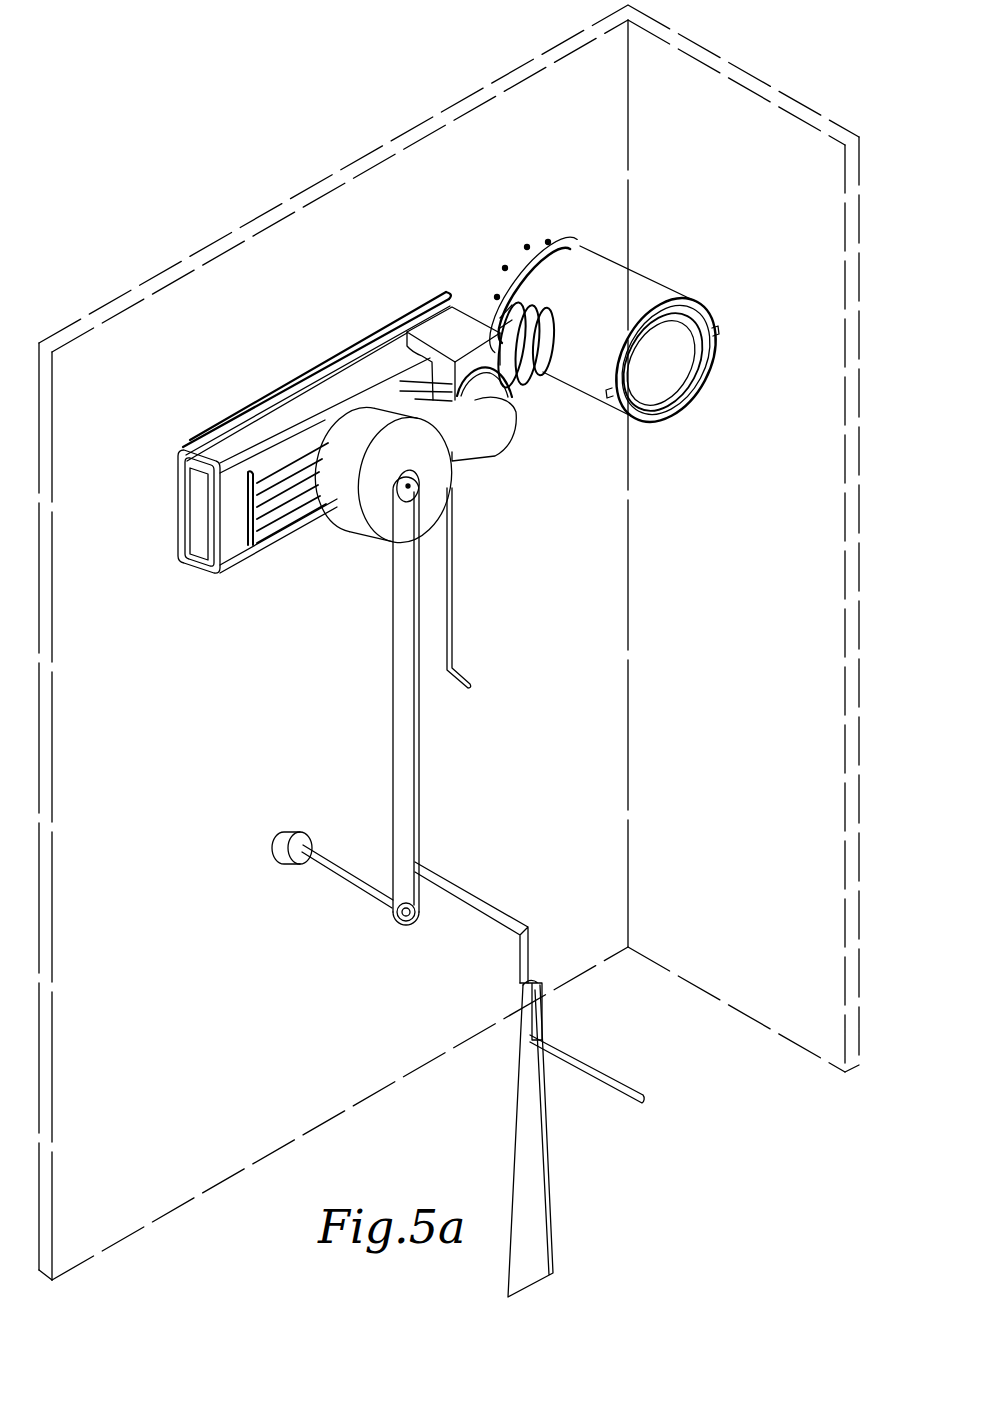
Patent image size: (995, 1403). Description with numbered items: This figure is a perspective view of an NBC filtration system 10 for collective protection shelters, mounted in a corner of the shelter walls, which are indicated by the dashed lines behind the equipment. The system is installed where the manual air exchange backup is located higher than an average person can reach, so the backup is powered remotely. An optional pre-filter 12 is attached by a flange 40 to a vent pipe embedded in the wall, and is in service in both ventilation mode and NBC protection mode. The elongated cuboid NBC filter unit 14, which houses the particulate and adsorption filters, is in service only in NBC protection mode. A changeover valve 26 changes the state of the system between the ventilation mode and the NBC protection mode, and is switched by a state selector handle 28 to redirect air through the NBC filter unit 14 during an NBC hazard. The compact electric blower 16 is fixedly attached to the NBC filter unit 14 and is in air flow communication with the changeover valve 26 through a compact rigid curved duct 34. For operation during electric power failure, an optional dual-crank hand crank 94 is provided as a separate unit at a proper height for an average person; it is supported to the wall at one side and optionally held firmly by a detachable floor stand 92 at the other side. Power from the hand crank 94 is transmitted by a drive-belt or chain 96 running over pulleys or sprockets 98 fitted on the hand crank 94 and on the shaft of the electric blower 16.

The NBC filtration system 10 is at (652, 211).
The pre-filter 12 is at (648, 287).
The NBC filter unit 14 is at (315, 382).
The electric blower 16 is at (343, 515).
The changeover valve 26 is at (443, 325).
The state selector handle 28 is at (468, 685).
The compact rigid curved duct 34 is at (512, 410).
The flange 40 is at (522, 246).
The detachable floor stand 92 is at (547, 1158).
The hand crank 94 is at (472, 895).
The drive-belt or chain 96 is at (424, 790).
The pulleys or sprockets 98 is at (403, 490).